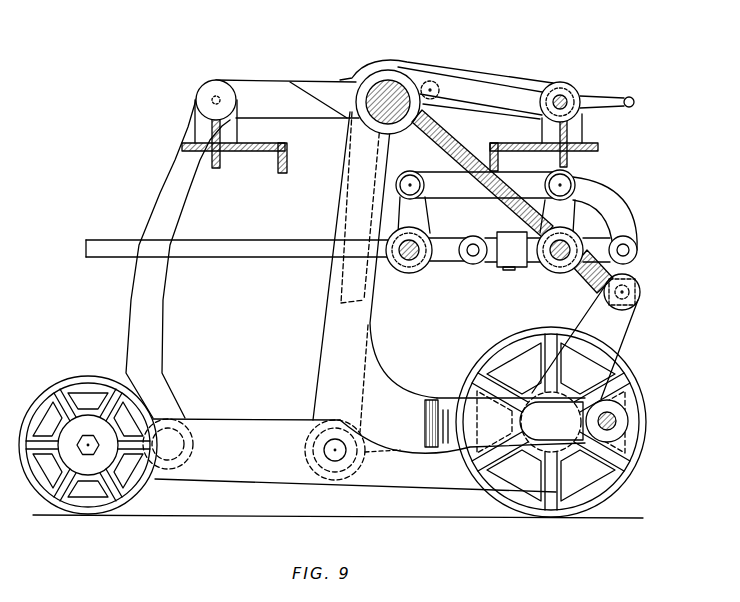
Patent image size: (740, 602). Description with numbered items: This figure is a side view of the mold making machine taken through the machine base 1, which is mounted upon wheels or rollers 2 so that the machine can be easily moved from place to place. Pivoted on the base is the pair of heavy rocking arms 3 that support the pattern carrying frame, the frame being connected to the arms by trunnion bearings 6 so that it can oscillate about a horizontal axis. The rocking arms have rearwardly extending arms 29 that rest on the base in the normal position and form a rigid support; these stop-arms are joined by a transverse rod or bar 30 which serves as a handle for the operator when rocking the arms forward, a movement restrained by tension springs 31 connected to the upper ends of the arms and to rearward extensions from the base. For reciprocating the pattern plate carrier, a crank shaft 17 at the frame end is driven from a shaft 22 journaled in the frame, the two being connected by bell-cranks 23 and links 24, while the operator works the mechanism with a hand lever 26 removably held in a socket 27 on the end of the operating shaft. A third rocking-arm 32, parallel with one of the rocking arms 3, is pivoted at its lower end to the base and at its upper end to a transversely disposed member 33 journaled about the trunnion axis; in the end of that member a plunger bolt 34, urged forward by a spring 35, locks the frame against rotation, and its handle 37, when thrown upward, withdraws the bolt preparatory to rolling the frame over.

The machine base 1 is at (229, 428).
The wheels or rollers 2 is at (82, 377).
The rocking arms 3 is at (328, 346).
The trunnion bearings 6 is at (386, 70).
The crank shaft 17 is at (407, 258).
The shaft 22 is at (575, 238).
The bell-cranks 23 is at (447, 257).
The links 24 is at (533, 175).
The hand lever 26 is at (277, 251).
The socket 27 is at (528, 262).
The rearwardly extending arms 29 is at (433, 399).
The transverse rod or bar 30 is at (628, 418).
The tension springs 31 is at (455, 160).
The third rocking-arm 32 is at (167, 326).
The transversely disposed member 33 is at (260, 85).
The plunger bolt 34 is at (559, 96).
The spring 35 is at (575, 83).
The handle 37 is at (605, 97).